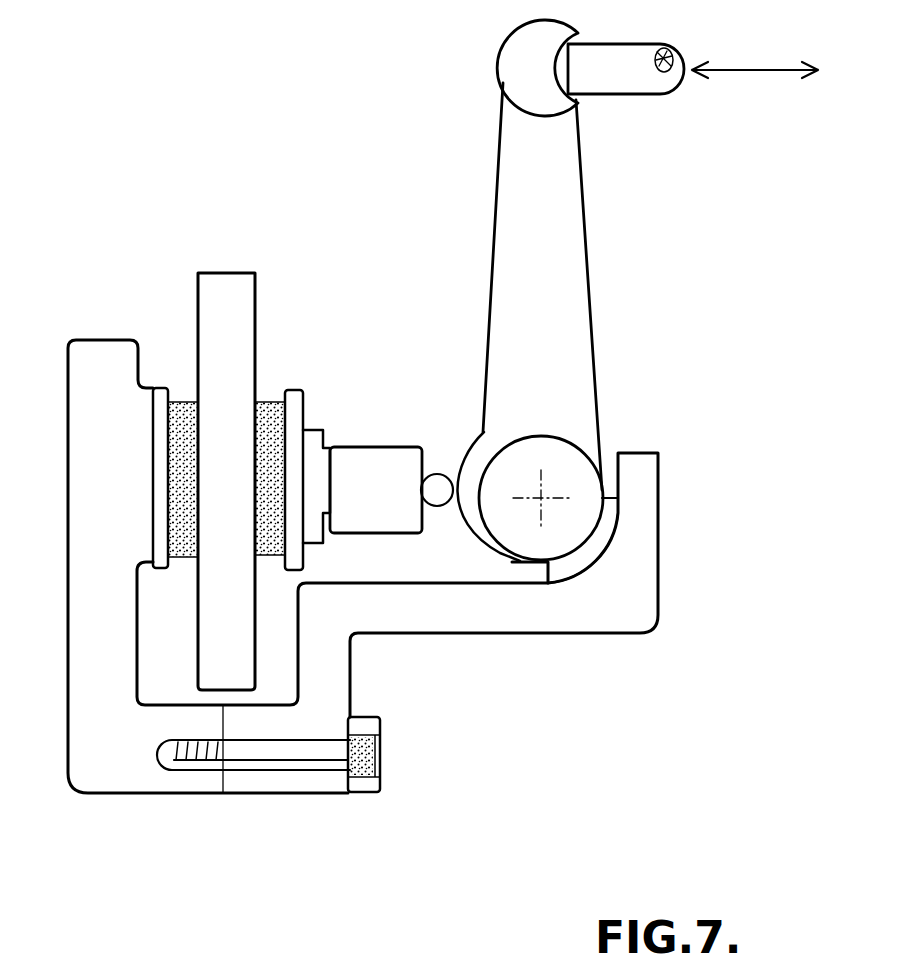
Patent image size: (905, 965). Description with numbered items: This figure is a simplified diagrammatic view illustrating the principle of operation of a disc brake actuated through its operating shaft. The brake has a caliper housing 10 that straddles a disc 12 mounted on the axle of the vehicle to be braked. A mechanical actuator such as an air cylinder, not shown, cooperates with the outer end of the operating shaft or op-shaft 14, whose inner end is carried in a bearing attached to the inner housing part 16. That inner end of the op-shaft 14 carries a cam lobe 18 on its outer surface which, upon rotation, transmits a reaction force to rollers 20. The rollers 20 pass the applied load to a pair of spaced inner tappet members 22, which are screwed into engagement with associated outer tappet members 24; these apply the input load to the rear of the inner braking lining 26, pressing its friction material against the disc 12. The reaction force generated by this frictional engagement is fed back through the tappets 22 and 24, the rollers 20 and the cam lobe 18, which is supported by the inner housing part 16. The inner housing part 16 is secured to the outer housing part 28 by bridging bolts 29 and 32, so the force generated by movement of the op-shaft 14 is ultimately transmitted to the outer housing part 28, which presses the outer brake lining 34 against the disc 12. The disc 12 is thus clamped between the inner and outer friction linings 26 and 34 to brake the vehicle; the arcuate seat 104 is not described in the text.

The caliper housing 10 is at (357, 818).
The disc 12 is at (223, 293).
The operating shaft 14 is at (553, 163).
The inner housing part 16 is at (635, 607).
The cam lobe 18 is at (470, 460).
The rollers 20 is at (440, 497).
The inner tappet members 22 is at (388, 467).
The outer tappet members 24 is at (312, 472).
The inner braking lining 26 is at (258, 398).
The outer housing part 28 is at (83, 765).
The bridging bolt 29 is at (354, 759).
The bridging bolt 32 is at (382, 753).
The outer brake lining 34 is at (188, 417).
The arcuate surface 104 is at (598, 533).